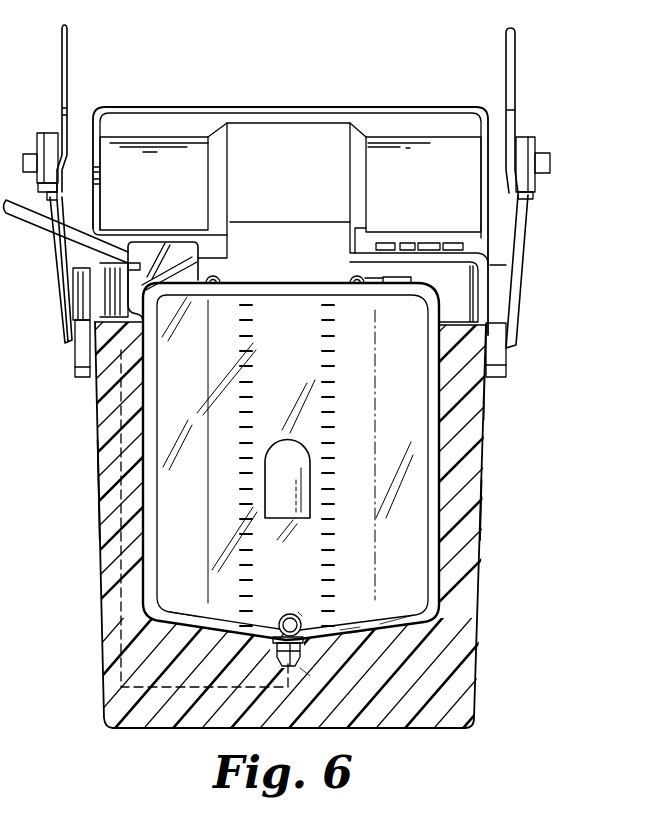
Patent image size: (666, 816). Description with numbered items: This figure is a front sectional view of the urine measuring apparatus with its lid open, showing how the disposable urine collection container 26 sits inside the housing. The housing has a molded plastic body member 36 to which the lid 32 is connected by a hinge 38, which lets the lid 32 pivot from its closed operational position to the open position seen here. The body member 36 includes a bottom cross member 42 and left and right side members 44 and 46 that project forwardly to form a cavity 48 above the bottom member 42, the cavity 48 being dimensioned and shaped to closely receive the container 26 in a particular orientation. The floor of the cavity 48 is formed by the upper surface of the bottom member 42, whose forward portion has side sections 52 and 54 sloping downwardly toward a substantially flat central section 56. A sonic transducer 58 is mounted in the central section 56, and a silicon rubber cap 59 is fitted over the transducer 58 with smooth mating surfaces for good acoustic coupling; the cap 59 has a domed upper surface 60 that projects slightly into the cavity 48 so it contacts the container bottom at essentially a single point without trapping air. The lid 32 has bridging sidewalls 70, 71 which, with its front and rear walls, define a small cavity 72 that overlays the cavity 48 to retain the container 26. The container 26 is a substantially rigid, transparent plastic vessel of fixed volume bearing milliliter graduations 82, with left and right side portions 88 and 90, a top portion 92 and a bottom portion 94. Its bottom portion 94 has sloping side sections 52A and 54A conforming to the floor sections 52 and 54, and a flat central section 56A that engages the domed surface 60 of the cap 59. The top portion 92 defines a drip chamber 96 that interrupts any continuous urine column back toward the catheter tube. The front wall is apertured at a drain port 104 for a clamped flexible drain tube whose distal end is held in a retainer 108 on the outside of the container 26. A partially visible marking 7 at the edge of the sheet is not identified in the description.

The partial numeral 7 is at (6, 580).
The urine collection container 26 is at (272, 391).
The lid 32 is at (374, 103).
The body member 36 is at (492, 573).
The hinge 38 is at (413, 240).
The bottom cross member 42 is at (405, 729).
The left side member 44 is at (97, 512).
The right side member 46 is at (483, 507).
The cavity 48 is at (470, 405).
The side section 52 is at (206, 624).
The sloping side section 52A is at (193, 623).
The side section 54 is at (379, 640).
The sloping side section 54A is at (420, 614).
The central section 56 is at (274, 642).
The flat central section 56A is at (278, 628).
The sonic transducer 58 is at (306, 672).
The silicon rubber cap 59 is at (303, 641).
The domed upper surface 60 is at (302, 617).
The bridging sidewall 70 is at (92, 125).
The bridging sidewall 71 is at (490, 137).
The small cavity 72 is at (160, 150).
The milliliter graduations 82 is at (330, 368).
The left side portion 88 is at (133, 463).
The right side portion 90 is at (441, 465).
The top portion 92 is at (273, 282).
The bottom portion 94 is at (351, 621).
The drip chamber 96 is at (150, 250).
The drain port 104 is at (298, 612).
The retainer 108 is at (310, 440).